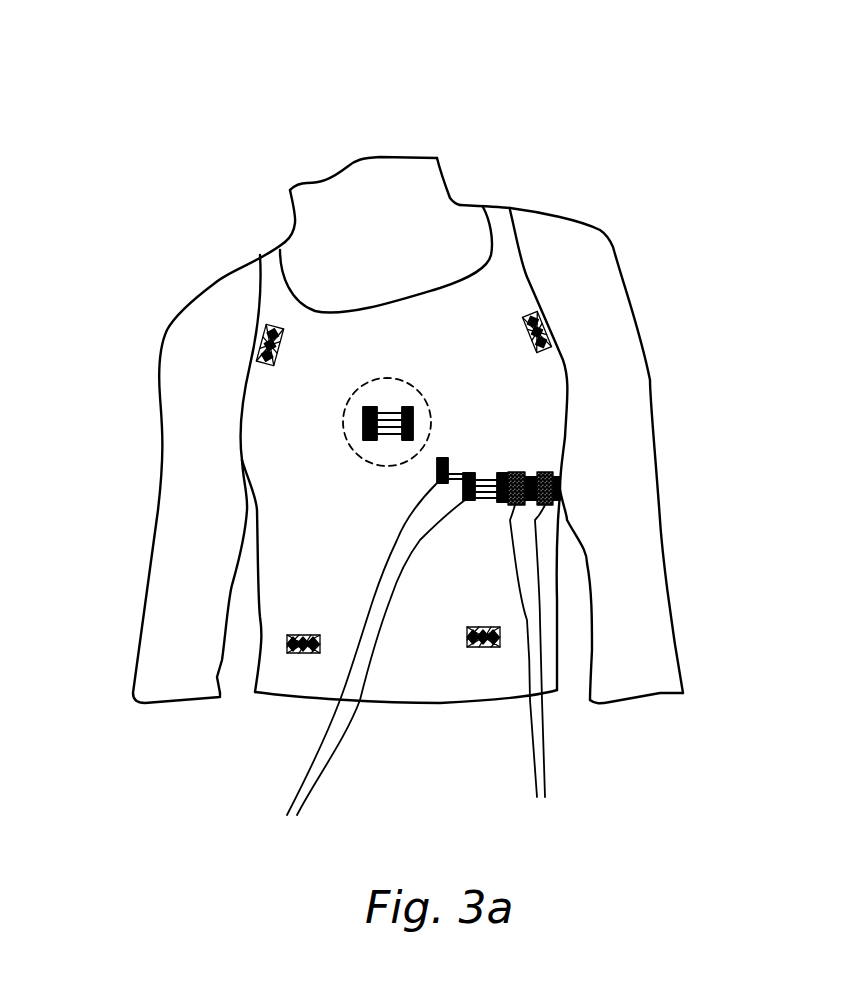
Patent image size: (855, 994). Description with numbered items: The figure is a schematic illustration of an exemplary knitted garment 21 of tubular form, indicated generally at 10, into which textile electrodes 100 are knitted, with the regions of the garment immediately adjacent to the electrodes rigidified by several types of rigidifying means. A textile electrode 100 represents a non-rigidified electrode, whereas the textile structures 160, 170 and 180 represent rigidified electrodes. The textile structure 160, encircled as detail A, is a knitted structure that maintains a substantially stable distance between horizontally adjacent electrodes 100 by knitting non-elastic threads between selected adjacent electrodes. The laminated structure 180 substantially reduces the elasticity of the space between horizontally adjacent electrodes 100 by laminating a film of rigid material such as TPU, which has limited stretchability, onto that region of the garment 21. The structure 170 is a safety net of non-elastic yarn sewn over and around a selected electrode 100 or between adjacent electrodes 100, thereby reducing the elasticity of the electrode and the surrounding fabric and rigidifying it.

The garment 10 is at (340, 168).
The garment 21 is at (535, 250).
The detail region A is at (392, 377).
The textile electrode 100 is at (405, 440).
The textile structure 160 is at (397, 410).
The structure 170 is at (258, 345).
The laminated structure 180 is at (500, 473).